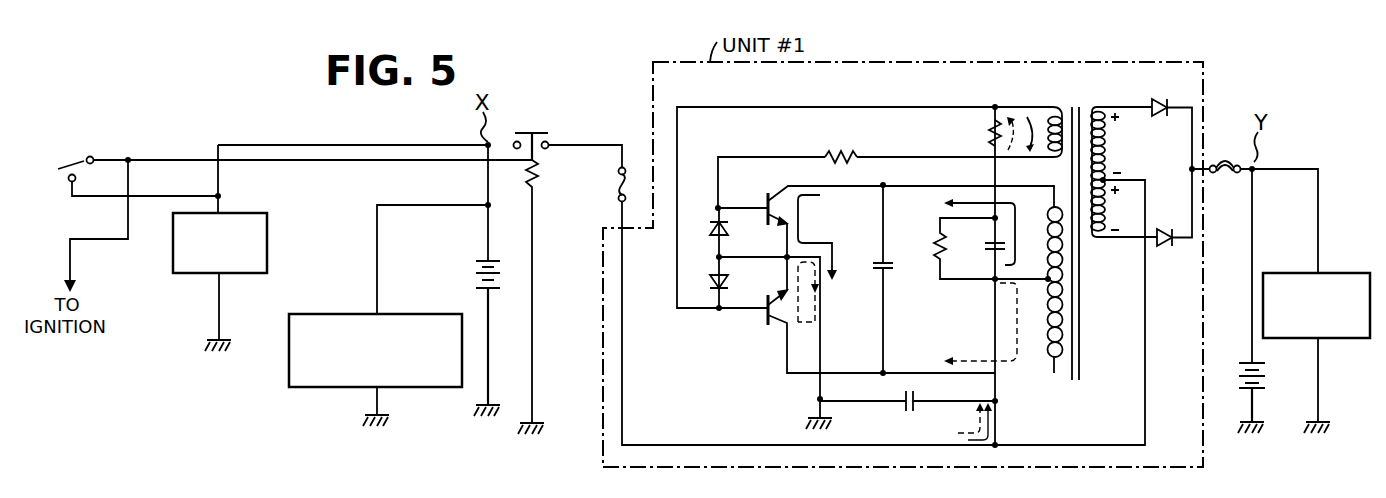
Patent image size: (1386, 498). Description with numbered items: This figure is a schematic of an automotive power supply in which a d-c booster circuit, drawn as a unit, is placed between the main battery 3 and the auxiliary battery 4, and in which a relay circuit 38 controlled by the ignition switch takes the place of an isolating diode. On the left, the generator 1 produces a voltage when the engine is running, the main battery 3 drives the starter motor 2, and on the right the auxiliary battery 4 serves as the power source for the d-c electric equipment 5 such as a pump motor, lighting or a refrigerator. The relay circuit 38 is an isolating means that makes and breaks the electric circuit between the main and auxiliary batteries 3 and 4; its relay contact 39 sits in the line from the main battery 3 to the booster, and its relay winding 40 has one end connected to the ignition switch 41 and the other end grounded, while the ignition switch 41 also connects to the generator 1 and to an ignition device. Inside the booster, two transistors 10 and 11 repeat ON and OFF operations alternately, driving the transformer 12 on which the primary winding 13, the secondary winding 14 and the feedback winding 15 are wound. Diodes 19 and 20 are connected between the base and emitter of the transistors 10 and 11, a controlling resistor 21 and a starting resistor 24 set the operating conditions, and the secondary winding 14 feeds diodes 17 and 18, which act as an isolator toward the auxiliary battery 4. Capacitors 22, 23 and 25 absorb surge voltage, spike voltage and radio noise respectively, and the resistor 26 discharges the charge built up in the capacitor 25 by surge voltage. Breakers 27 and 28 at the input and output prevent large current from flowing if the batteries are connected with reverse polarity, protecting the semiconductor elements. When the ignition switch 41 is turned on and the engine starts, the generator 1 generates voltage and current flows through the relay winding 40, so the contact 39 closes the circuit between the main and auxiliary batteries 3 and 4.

The generator 1 is at (270, 236).
The starter motor 2 is at (338, 314).
The main battery 3 is at (476, 272).
The auxiliary battery 4 is at (1266, 370).
The d-c electric equipment 5 is at (1340, 272).
The transistor 10 is at (770, 195).
The transistor 11 is at (775, 326).
The transformer 12 is at (1076, 382).
The primary winding 13 is at (1048, 360).
The secondary winding 14 is at (1100, 112).
The feedback winding 15 is at (1050, 117).
The diode 17 is at (1157, 120).
The diode 18 is at (1165, 250).
The diode 19 is at (727, 228).
The diode 20 is at (726, 281).
The controlling resistor 21 is at (848, 153).
The capacitor 22 is at (895, 268).
The capacitor 23 is at (905, 412).
The starting resistor 24 is at (986, 136).
The capacitor 25 is at (986, 248).
The resistor 26 is at (935, 242).
The breaker 27 is at (622, 165).
The breaker 28 is at (1222, 160).
The relay circuit 38 is at (525, 126).
The relay contact 39 is at (544, 131).
The relay winding 40 is at (547, 178).
The ignition switch 41 is at (77, 160).